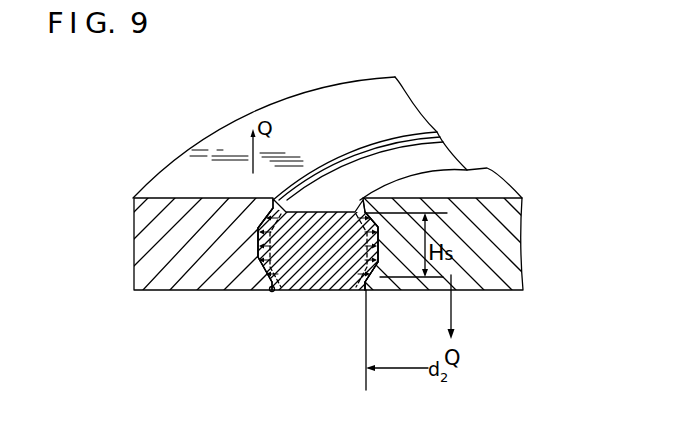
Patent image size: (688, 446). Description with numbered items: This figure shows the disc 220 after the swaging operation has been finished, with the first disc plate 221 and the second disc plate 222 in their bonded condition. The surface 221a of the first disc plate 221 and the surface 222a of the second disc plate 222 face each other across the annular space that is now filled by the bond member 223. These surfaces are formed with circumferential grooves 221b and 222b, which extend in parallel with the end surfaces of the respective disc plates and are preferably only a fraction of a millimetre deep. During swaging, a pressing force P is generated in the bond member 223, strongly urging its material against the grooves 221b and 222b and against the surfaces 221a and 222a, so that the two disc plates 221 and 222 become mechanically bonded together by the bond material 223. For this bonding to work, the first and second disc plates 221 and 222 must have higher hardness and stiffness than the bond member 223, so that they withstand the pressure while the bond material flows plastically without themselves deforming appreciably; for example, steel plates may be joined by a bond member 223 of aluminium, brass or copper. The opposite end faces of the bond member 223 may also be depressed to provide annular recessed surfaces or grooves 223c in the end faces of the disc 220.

The disc 220 is at (226, 123).
The first disc plate 221 is at (162, 204).
The surface of the first disc plate 221a is at (271, 293).
The circumferential groove 221b is at (258, 252).
The second disc plate 222 is at (513, 246).
The surface of the second disc plate 222a is at (360, 284).
The circumferential groove 222b is at (379, 254).
The bond member 223 is at (300, 279).
The annular recessed surfaces or grooves 223c is at (324, 211).